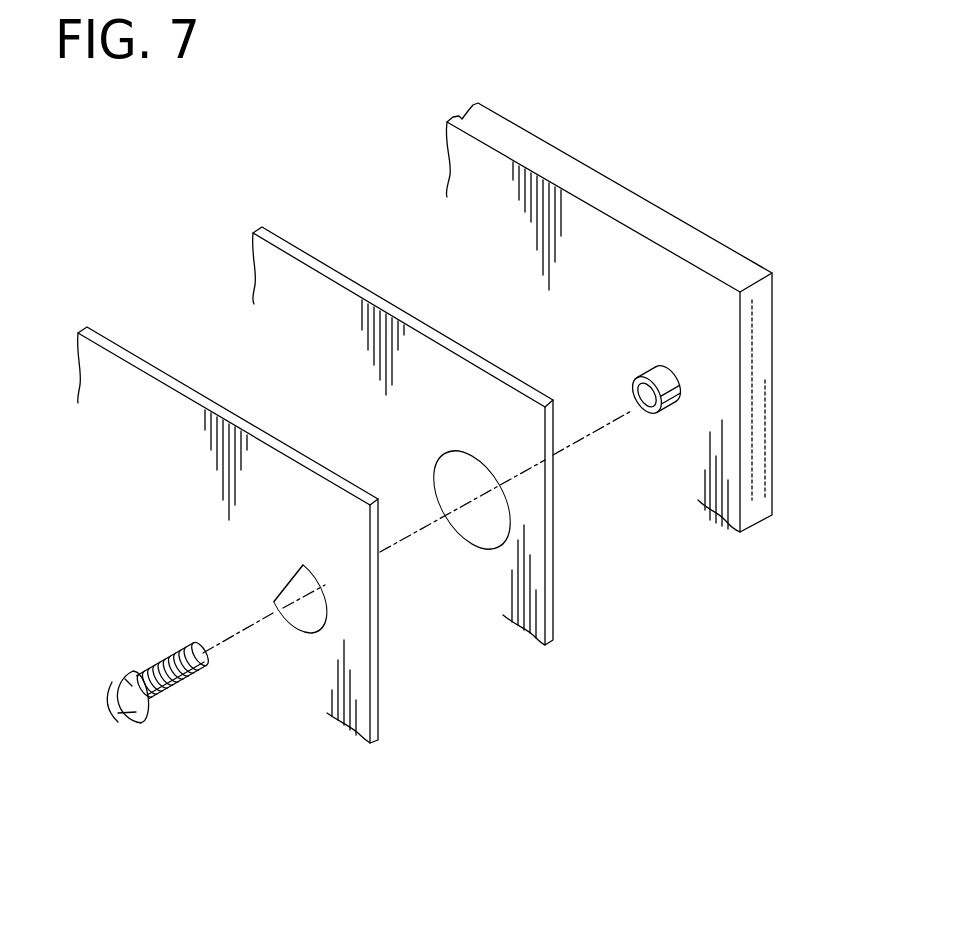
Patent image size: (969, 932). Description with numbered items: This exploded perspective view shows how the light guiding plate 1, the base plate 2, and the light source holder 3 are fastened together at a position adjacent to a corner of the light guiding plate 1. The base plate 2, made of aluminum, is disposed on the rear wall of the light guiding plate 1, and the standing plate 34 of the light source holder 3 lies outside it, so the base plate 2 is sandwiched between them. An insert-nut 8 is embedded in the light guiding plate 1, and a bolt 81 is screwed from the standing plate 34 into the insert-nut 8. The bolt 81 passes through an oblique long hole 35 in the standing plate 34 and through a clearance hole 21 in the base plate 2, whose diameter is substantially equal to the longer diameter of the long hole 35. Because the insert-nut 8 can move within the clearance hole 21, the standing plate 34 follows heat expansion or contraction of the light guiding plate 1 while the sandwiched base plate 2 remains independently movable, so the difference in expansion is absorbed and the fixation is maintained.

The light guiding plate 1 is at (760, 433).
The base plate 2 is at (437, 436).
The light source holder 3 is at (290, 535).
The standing plate 34 is at (228, 535).
The clearance hole 21 is at (482, 515).
The long hole 35 is at (302, 617).
The insert-nut 8 is at (665, 414).
The bolt 81 is at (168, 700).